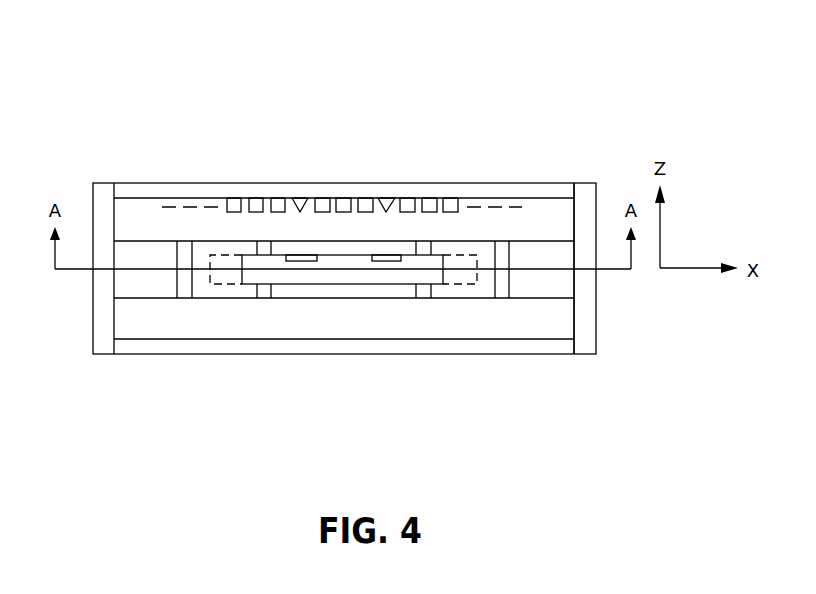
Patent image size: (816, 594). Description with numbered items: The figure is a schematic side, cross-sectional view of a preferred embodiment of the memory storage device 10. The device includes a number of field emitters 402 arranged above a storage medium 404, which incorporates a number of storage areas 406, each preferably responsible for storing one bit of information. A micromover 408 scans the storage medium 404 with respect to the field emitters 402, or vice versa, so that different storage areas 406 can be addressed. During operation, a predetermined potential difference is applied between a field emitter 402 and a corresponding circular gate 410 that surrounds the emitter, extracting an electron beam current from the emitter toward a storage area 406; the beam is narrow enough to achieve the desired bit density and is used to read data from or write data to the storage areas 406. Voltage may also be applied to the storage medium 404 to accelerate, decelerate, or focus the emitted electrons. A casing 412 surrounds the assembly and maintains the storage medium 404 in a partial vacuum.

The memory storage device 10 is at (124, 128).
The field emitter 402 is at (386, 206).
The storage medium 404 is at (250, 285).
The storage area 406 is at (382, 256).
The micromover 408 is at (147, 298).
The circular gate 410 is at (364, 205).
The casing 412 is at (583, 298).